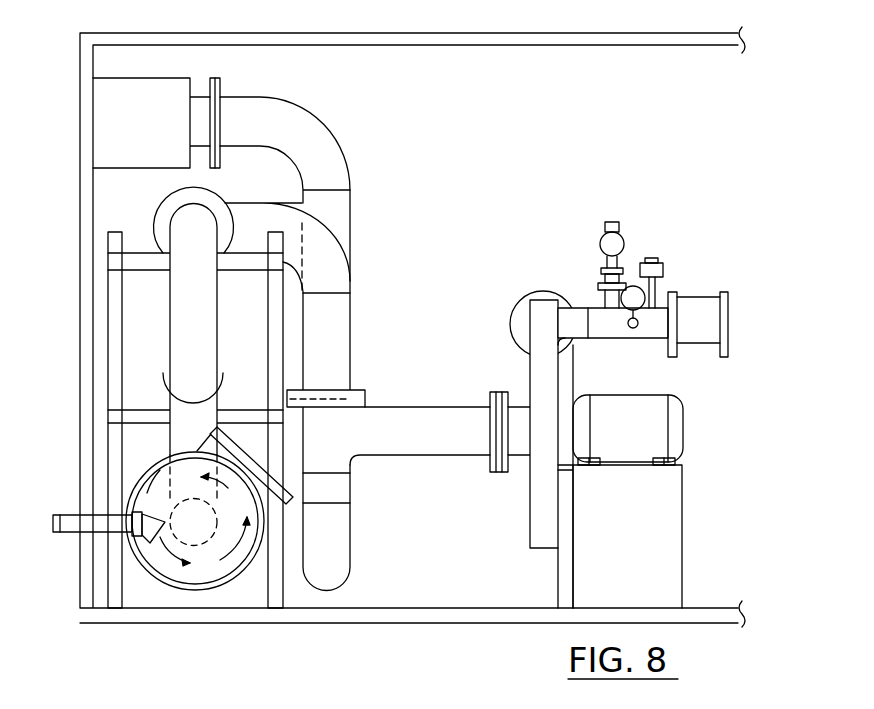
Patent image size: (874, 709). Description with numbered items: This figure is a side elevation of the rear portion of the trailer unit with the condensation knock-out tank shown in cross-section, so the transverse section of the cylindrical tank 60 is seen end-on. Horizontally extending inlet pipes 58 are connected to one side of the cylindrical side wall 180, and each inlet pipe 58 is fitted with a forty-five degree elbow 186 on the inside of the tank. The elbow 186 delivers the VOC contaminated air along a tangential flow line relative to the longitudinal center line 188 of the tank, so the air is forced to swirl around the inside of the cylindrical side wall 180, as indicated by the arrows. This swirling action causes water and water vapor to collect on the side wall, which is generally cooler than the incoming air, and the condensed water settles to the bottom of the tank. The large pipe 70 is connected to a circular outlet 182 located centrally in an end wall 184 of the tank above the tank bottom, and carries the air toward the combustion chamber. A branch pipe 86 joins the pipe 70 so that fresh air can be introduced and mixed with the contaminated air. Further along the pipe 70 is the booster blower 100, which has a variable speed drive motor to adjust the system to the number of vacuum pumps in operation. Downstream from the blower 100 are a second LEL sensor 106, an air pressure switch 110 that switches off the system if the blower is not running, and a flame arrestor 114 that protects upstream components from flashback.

The inlet pipe 58 is at (72, 515).
The cylindrical tank 60 is at (207, 591).
The piping means 70 is at (454, 440).
The branch pipe 86 is at (348, 163).
The booster blower 100 is at (537, 370).
The second LEL sensor 106 is at (605, 238).
The air pressure switch 110 is at (657, 262).
The flame arrestor 114 is at (703, 297).
The cylindrical side wall 180 is at (167, 590).
The circular outlet 182 is at (147, 493).
The end wall 184 is at (173, 510).
The 45 degree elbow 186 is at (147, 538).
The longitudinal center line 188 is at (205, 527).